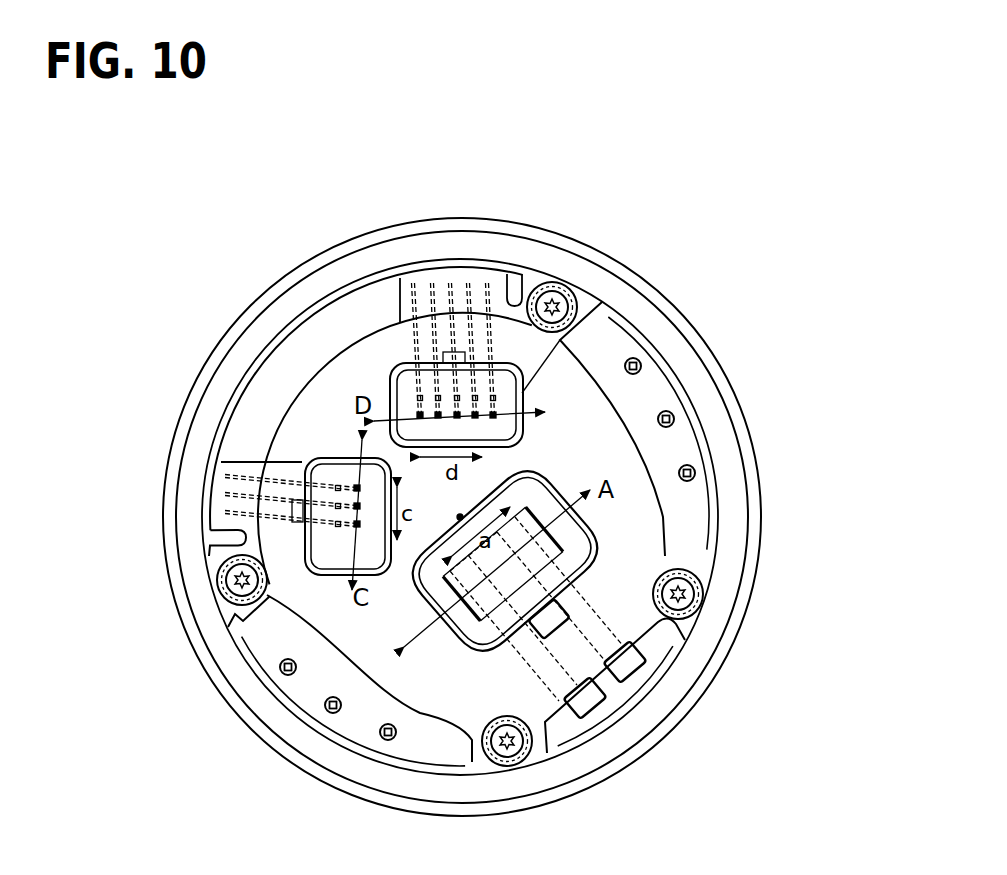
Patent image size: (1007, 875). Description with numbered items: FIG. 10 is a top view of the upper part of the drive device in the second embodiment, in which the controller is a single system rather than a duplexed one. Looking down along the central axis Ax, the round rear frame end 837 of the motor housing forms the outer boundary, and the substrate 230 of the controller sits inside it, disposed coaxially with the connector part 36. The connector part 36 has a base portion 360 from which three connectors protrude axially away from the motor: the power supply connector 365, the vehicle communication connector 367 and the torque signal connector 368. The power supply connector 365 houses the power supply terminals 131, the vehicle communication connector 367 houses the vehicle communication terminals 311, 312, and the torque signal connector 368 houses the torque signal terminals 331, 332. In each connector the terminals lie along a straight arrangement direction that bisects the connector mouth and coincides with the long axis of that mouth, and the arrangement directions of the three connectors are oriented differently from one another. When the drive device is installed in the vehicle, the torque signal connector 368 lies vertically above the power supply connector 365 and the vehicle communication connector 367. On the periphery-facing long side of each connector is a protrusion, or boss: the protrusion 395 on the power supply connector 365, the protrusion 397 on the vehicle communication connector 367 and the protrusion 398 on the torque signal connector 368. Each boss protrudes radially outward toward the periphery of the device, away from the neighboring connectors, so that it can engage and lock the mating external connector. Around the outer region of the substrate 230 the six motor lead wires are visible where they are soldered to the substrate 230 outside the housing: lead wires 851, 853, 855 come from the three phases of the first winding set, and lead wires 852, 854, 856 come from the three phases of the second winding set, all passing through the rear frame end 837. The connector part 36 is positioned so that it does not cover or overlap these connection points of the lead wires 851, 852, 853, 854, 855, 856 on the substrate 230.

The connector part 36 is at (337, 356).
The power supply terminals 131 is at (567, 560).
The substrate 230 is at (592, 335).
The vehicle communication terminals 311 is at (207, 569).
The vehicle communication terminals 312 is at (318, 470).
The torque signal terminals 331 is at (493, 398).
The torque signal terminals 332 is at (420, 413).
The base portion 360 is at (332, 398).
The power supply connector 365 is at (602, 543).
The vehicle communication connector 367 is at (338, 488).
The torque signal connector 368 is at (522, 393).
The protrusion 395 is at (533, 618).
The protrusion 397 is at (235, 491).
The protrusion 398 is at (455, 352).
The rear frame end 837 is at (328, 274).
The lead wire 851 is at (641, 363).
The lead wire 852 is at (674, 420).
The lead wire 853 is at (695, 473).
The lead wire 854 is at (282, 667).
The lead wire 855 is at (326, 707).
The lead wire 856 is at (382, 734).
The axis Ax is at (461, 516).